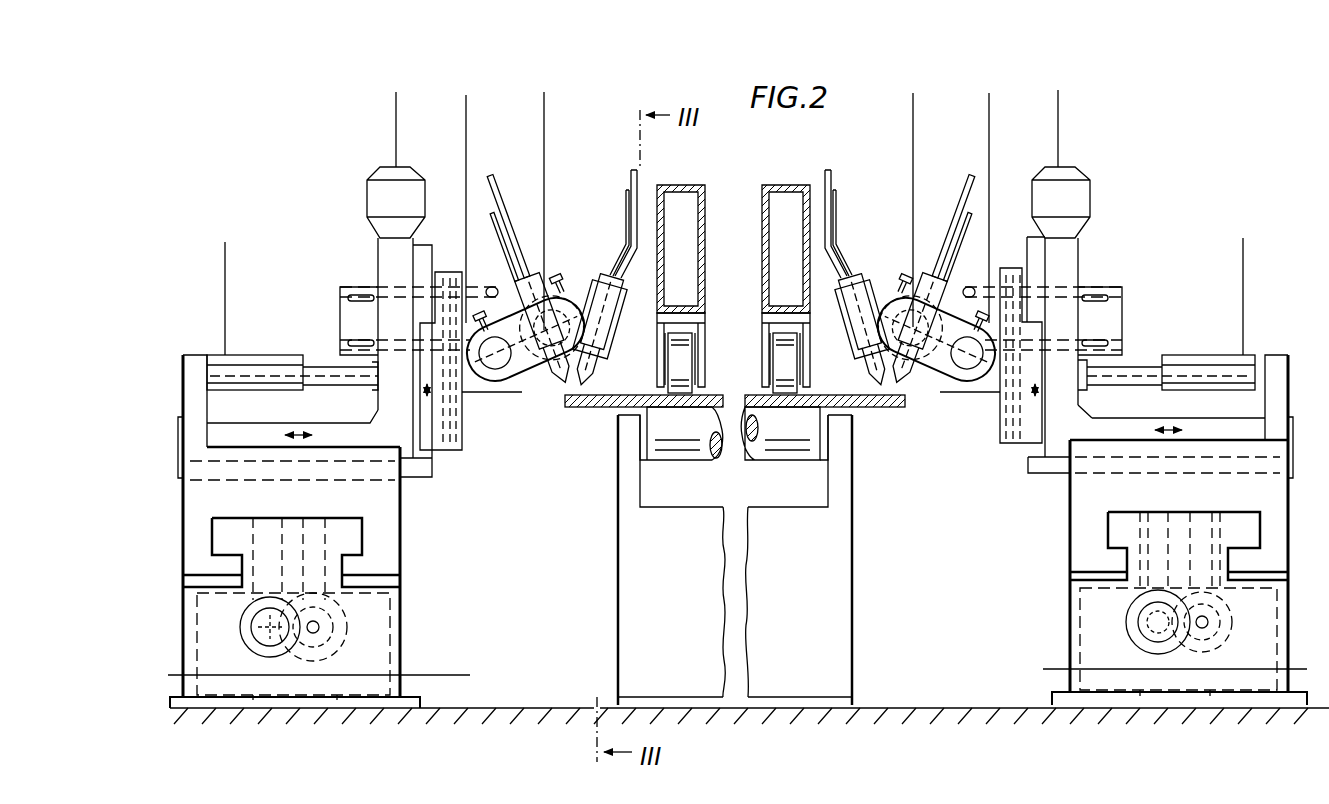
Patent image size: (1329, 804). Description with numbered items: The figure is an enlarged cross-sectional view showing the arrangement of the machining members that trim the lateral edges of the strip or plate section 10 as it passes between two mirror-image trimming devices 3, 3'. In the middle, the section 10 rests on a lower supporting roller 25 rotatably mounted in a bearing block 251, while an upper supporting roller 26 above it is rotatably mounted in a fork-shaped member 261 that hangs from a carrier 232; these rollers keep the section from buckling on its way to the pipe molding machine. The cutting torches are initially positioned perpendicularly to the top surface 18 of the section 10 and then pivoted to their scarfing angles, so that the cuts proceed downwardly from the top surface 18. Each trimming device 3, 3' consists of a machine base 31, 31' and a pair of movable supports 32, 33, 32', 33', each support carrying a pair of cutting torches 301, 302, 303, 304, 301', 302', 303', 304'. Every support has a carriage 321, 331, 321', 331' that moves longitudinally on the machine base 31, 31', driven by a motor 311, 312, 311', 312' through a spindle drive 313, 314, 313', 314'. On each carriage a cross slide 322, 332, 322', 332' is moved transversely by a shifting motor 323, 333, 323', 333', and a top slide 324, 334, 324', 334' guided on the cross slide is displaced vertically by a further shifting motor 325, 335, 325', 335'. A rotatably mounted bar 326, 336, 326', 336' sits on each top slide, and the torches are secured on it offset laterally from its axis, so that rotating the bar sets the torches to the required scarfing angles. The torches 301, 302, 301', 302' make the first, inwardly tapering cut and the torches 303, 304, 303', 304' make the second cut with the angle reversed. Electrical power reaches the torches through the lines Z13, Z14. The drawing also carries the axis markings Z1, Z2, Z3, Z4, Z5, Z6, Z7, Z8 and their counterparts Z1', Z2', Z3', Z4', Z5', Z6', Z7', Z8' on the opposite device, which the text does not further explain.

The trimming device 3 is at (432, 647).
The trimming device 3' is at (1042, 645).
The section 10 is at (760, 396).
The top surface 18 is at (823, 396).
The supporting roller 25 is at (693, 455).
The supporting roller 26 is at (787, 350).
The machine base 31 is at (338, 569).
The machine base 31' is at (1142, 571).
The movable support 32 is at (292, 503).
The movable support 33 is at (292, 503).
The movable support 32' is at (1186, 490).
The movable support 33' is at (1186, 490).
The carrier 232 is at (765, 212).
The bearing block 251 is at (707, 617).
The fork-shaped member 261 is at (770, 325).
The cutting torch 301 is at (537, 365).
The cutting torch 302 is at (537, 365).
The cutting torch 301' is at (945, 362).
The cutting torch 302' is at (945, 362).
The cutting torch 303 is at (578, 385).
The cutting torch 304 is at (578, 385).
The cutting torch 303' is at (903, 382).
The cutting torch 304' is at (903, 382).
The motor 311 is at (250, 627).
The motor 311' is at (1138, 627).
The motor 312 is at (334, 627).
The motor 312' is at (1228, 627).
The spindle drive 313 is at (258, 717).
The spindle drive 313' is at (1086, 729).
The spindle drive 314 is at (350, 711).
The spindle drive 314' is at (1249, 726).
The carriage 321 is at (366, 628).
The carriage 331 is at (366, 628).
The carriage 321' is at (1108, 622).
The carriage 331' is at (1108, 622).
The cross slide 322 is at (374, 335).
The cross slide 332 is at (374, 335).
The cross slide 322' is at (1087, 319).
The cross slide 332' is at (1087, 319).
The shifting motor 323 is at (292, 350).
The shifting motor 333 is at (292, 350).
The shifting motor 323' is at (1166, 349).
The shifting motor 333' is at (1166, 349).
The top slide 324 is at (483, 407).
The top slide 334 is at (483, 407).
The top slide 324' is at (991, 403).
The top slide 334' is at (991, 403).
The shifting motor 325 is at (357, 176).
The shifting motor 335 is at (357, 176).
The shifting motor 325' is at (1109, 176).
The shifting motor 335' is at (1109, 176).
The rotatably mounted bar 326 is at (523, 346).
The rotatably mounted bar 326' is at (939, 345).
The rotatably mounted bar 336 is at (615, 331).
The rotatably mounted bar 336' is at (870, 301).
The axis Z1 is at (316, 654).
The axis Z1' is at (1160, 687).
The axis Z2 is at (256, 298).
The axis Z2' is at (1262, 280).
The axis Z3 is at (416, 111).
The axis Z3' is at (1095, 118).
The axis Z4 is at (482, 209).
The axis Z4' is at (1009, 208).
The axis Z5 is at (561, 211).
The axis Z5' is at (933, 210).
The axis Z6 is at (416, 111).
The axis Z6' is at (1095, 118).
The axis Z7 is at (256, 298).
The axis Z7' is at (1262, 280).
The axis Z8 is at (483, 659).
The axis Z8' is at (1268, 633).
The electrical power line Z13 is at (497, 205).
The electrical power line Z14 is at (500, 228).